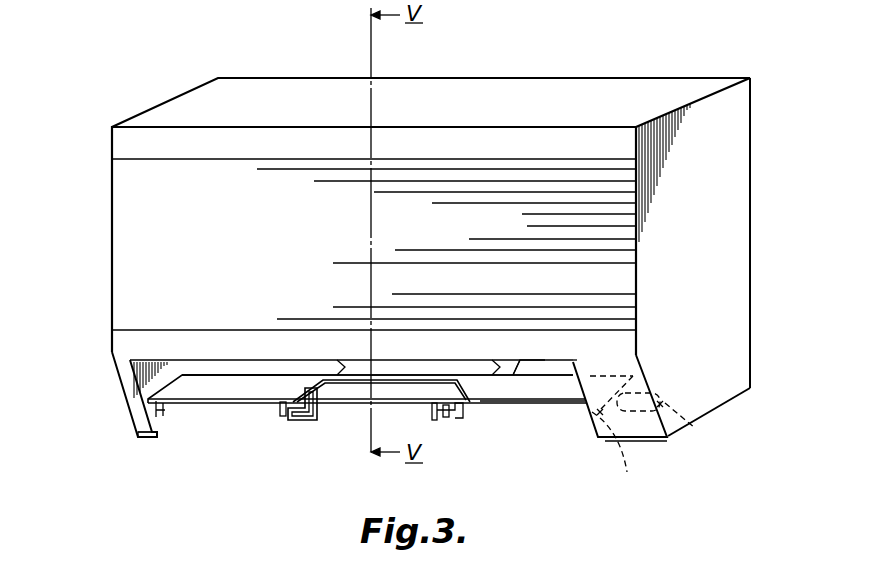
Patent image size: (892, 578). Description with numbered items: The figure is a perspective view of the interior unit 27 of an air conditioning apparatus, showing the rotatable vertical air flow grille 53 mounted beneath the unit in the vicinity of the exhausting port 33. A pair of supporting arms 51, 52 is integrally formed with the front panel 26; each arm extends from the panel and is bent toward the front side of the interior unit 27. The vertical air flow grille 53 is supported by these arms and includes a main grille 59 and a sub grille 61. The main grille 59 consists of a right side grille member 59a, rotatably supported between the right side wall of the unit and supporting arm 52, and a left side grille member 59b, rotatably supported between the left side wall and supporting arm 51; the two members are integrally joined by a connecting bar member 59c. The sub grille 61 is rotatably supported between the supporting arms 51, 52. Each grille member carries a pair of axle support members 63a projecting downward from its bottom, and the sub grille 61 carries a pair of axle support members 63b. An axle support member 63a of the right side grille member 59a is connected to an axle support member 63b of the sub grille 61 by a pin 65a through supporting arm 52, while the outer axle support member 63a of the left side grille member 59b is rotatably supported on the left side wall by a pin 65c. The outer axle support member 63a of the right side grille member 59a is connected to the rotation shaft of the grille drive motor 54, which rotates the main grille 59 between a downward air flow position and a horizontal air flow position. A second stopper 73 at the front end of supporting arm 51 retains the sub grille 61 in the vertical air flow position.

The front panel 26 is at (127, 257).
The interior unit 27 is at (501, 77).
The exhausting port 33 is at (553, 420).
The supporting arm 51 is at (360, 375).
The supporting arm 52 is at (518, 376).
The vertical air flow grille 53 is at (267, 404).
The grille drive motor 54 is at (654, 417).
The main grille 59 is at (242, 410).
The right side grille member 59a is at (500, 404).
The left side grille member 59b is at (222, 404).
The connecting bar member 59c is at (433, 376).
The sub grille 61 is at (333, 404).
The axle support member 63a is at (140, 429).
The axle support member 63b is at (428, 406).
The pin 65a is at (452, 410).
The pin 65c is at (153, 410).
The second stopper 73 is at (307, 433).